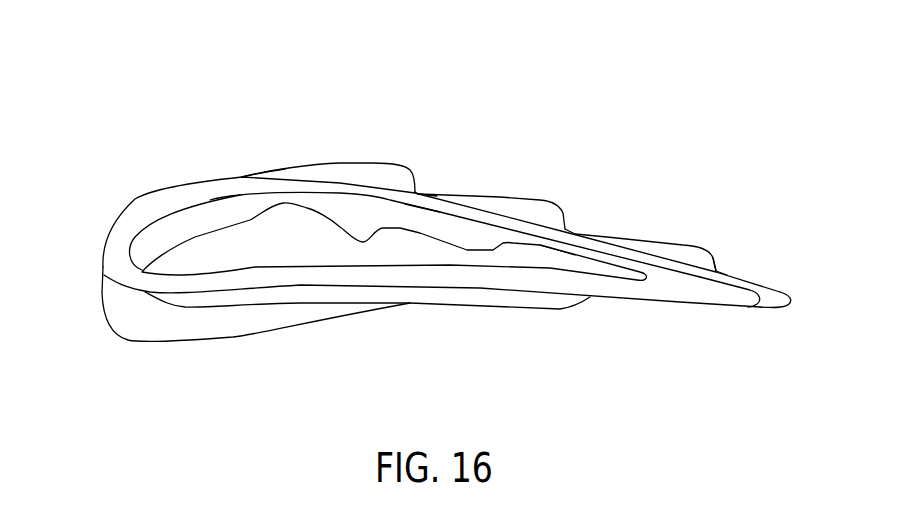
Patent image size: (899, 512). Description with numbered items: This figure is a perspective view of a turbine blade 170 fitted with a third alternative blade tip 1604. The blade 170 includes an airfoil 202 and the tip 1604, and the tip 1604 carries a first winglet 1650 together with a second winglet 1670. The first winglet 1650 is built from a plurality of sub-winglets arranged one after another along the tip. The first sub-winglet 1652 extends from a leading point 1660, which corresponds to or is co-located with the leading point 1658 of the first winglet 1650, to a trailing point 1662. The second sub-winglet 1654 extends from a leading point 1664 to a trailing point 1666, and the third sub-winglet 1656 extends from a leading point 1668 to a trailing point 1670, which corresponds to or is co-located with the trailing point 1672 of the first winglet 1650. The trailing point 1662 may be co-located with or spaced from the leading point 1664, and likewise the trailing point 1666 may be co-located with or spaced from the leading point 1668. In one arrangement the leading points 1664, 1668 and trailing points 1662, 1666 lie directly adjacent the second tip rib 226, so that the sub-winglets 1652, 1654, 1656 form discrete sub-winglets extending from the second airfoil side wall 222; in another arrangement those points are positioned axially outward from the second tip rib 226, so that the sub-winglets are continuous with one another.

The turbine blade 170 is at (492, 96).
The airfoil 202 is at (108, 303).
The second airfoil side wall 222 is at (770, 290).
The second tip rib 226 is at (168, 205).
The blade tip 1604 is at (441, 200).
The first winglet 1650 is at (505, 212).
The first sub-winglet 1652 is at (385, 176).
The second sub-winglet 1654 is at (539, 211).
The third sub-winglet 1656 is at (687, 260).
The leading point of first winglet 1658 is at (244, 175).
The leading point of first sub-winglet 1660 is at (236, 194).
The trailing point of first sub-winglet 1662 is at (424, 192).
The leading point of second sub-winglet 1664 is at (420, 209).
The trailing point of second sub-winglet 1666 is at (575, 228).
The leading point of third sub-winglet 1668 is at (558, 252).
The second winglet 1670 is at (730, 273).
The trailing point of first winglet 1672 is at (728, 294).